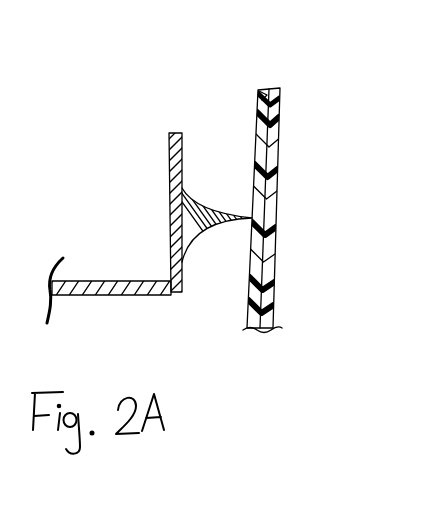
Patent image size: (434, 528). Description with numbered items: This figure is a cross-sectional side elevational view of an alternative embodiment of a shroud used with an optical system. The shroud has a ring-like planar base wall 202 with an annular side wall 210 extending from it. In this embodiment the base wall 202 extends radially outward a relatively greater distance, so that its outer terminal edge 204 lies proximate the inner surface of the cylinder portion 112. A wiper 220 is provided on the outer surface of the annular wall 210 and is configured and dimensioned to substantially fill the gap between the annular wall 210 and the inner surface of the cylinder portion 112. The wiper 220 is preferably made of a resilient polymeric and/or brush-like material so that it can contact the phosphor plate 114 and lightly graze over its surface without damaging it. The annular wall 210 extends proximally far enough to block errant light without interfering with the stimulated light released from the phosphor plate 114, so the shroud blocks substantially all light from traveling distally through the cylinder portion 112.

The cylinder portion 112 is at (280, 127).
The phosphor plate 114 is at (259, 91).
The base wall 202 is at (80, 281).
The outer terminal edge 204 is at (171, 290).
The annular side wall 210 is at (186, 148).
The wiper 220 is at (226, 196).